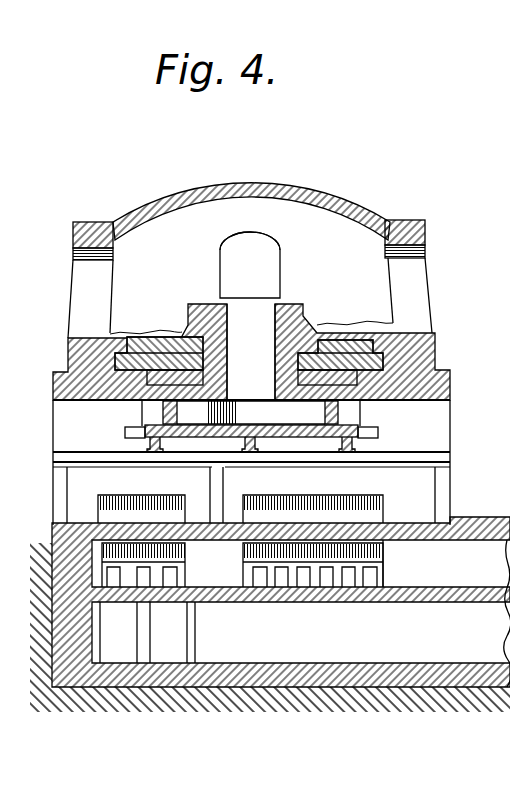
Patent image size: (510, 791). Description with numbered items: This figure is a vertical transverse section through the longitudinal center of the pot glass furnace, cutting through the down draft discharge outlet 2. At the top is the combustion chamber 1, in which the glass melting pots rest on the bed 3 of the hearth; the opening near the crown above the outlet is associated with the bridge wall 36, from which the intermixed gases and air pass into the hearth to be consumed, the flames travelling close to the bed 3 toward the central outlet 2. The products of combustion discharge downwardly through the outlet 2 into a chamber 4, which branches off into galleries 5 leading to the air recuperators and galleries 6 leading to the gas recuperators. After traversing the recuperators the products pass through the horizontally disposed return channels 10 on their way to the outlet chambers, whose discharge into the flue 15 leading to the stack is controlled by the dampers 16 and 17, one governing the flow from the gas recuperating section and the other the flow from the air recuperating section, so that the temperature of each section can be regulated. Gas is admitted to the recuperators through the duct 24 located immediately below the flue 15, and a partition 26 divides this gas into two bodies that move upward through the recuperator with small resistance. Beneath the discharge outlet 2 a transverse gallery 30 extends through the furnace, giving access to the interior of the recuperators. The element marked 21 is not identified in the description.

The combustion chamber 1 is at (125, 280).
The down draft discharge outlet 2 is at (250, 376).
The bed of the hearth 3 is at (335, 333).
The chamber 4 is at (300, 412).
The galleries leading to the air recuperators 5 is at (322, 412).
The galleries leading to the gas recuperators 6 is at (205, 411).
The return channels 10 is at (262, 575).
The flue leading to the stack 15 is at (470, 571).
The damper 16 is at (133, 512).
The damper 17 is at (313, 512).
The arched roof of opening 21 is at (266, 252).
The gas duct 24 is at (480, 630).
The partition 26 is at (142, 645).
The transverse gallery 30 is at (233, 495).
The bridge wall 36 is at (250, 265).